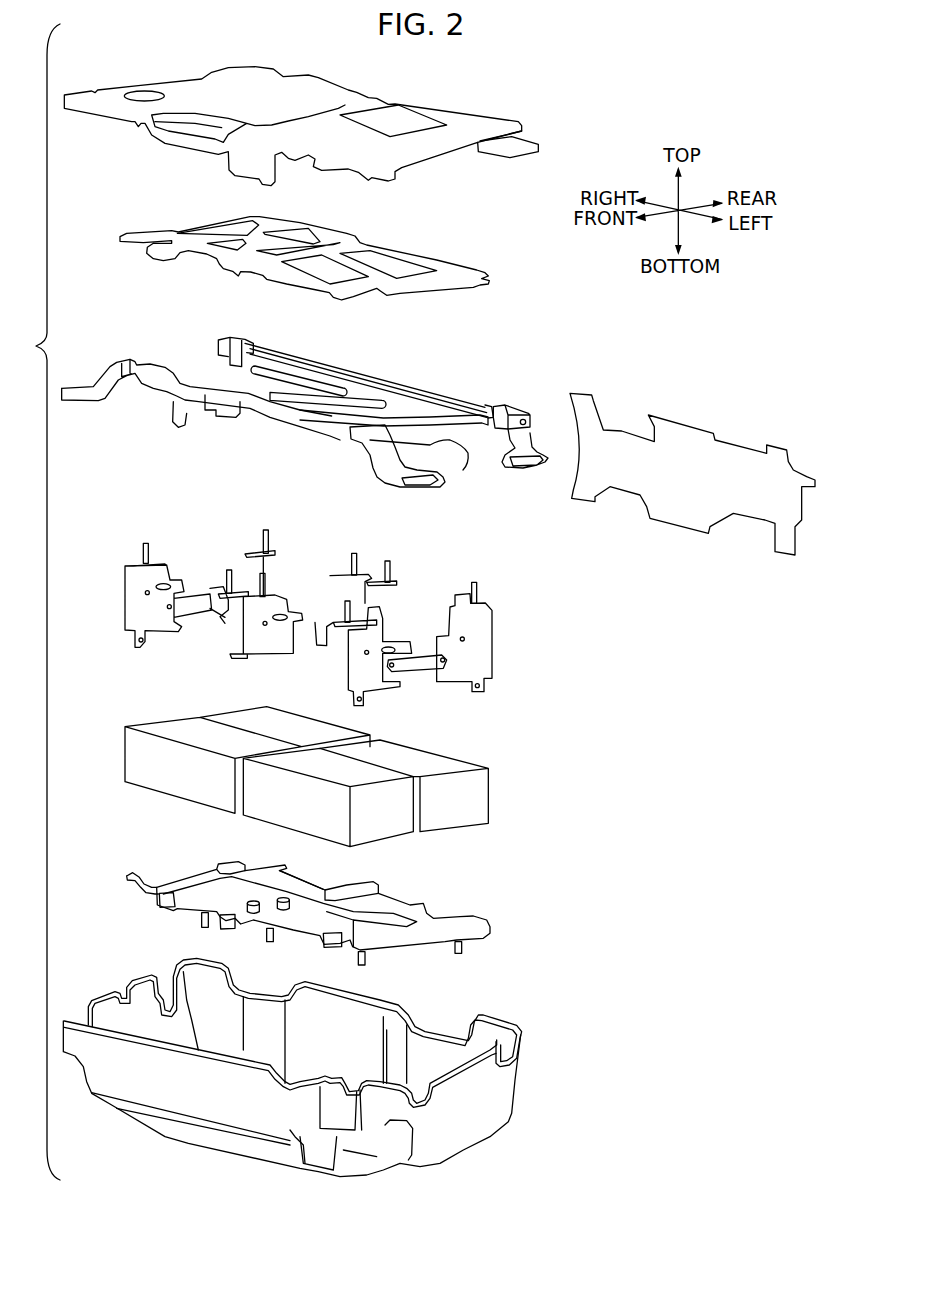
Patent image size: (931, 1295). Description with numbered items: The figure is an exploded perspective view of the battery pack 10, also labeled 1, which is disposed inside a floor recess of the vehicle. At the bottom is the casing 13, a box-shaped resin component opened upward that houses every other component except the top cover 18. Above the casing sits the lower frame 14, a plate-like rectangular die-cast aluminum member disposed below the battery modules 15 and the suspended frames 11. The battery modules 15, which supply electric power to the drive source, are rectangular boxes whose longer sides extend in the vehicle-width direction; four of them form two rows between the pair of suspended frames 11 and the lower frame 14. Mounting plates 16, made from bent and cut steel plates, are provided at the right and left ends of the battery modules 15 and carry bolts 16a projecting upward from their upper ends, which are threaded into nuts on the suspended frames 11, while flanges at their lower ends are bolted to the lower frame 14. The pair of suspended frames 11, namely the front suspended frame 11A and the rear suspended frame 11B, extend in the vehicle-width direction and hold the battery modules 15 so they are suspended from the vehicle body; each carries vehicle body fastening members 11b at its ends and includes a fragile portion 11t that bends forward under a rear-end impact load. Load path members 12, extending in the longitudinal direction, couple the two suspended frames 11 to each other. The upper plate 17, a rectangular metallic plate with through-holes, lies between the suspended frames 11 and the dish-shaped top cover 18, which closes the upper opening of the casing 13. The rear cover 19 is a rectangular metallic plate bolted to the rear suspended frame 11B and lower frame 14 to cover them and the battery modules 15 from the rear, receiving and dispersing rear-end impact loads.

The battery device 1 is at (488, 83).
The battery pack 10 is at (438, 602).
The suspended frame 11 is at (312, 414).
The front suspended frame 11A is at (275, 424).
The rear suspended frame 11B is at (390, 383).
The fragile portion 11t is at (392, 466).
The vehicle body fastening member 11b is at (507, 469).
The load path member 12 is at (318, 363).
The casing 13 is at (311, 1067).
The lower frame 14 is at (337, 913).
The battery module 15 is at (305, 783).
The mounting plate 16 is at (310, 603).
The bolt 16a is at (310, 560).
The upper plate 17 is at (304, 254).
The top cover 18 is at (301, 123).
The rear cover 19 is at (692, 470).